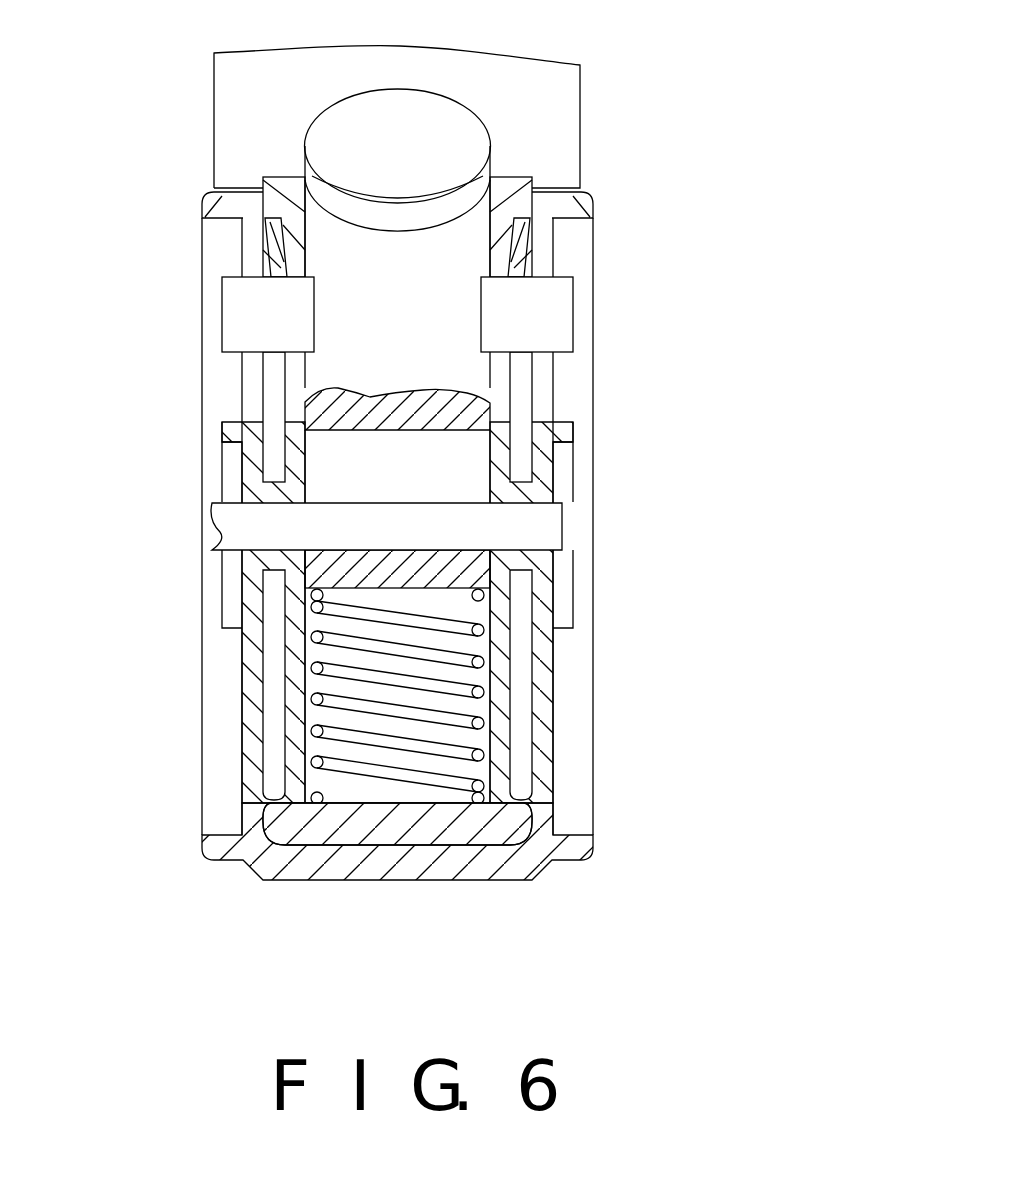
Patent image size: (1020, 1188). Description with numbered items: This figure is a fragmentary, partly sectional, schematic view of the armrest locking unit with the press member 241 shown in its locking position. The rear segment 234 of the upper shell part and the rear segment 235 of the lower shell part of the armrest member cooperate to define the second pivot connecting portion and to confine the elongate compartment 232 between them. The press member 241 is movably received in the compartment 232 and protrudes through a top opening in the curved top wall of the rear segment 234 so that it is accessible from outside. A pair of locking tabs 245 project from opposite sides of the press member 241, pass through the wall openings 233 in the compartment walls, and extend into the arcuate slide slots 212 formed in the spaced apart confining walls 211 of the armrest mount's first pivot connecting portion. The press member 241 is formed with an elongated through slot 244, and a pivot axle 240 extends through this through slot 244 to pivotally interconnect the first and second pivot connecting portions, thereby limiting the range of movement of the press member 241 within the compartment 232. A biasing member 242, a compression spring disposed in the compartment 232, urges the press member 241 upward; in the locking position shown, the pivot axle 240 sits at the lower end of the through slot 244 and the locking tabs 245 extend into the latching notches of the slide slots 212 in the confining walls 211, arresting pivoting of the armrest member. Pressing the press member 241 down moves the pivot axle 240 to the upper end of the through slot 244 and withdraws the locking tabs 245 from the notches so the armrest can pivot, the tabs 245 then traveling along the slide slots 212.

The confining wall 211 is at (213, 206).
The slide slot 212 is at (262, 402).
The compartment 232 is at (472, 675).
The wall opening 233 is at (293, 388).
The rear segment of the upper shell part 234 is at (512, 190).
The rear segment of the lower shell part 235 is at (320, 830).
The pivot axle 240 is at (510, 530).
The press member 241 is at (465, 252).
The biasing member 242 is at (473, 723).
The through slot 244 is at (462, 463).
The locking tab 245 is at (232, 320).